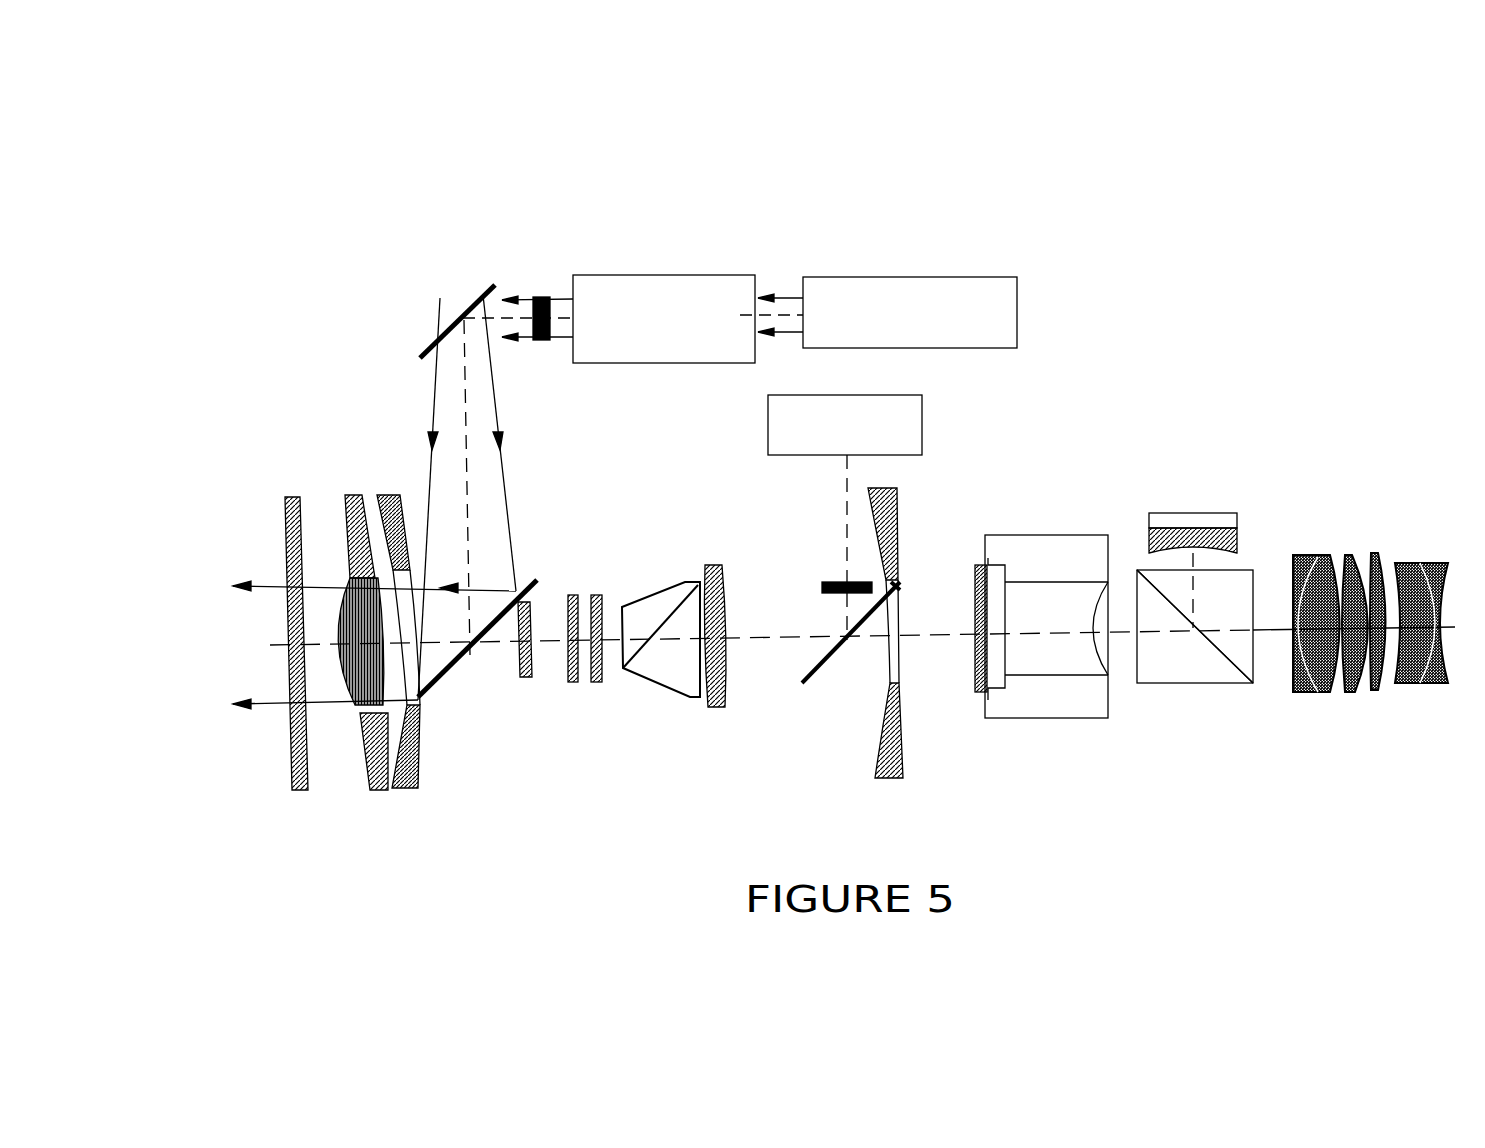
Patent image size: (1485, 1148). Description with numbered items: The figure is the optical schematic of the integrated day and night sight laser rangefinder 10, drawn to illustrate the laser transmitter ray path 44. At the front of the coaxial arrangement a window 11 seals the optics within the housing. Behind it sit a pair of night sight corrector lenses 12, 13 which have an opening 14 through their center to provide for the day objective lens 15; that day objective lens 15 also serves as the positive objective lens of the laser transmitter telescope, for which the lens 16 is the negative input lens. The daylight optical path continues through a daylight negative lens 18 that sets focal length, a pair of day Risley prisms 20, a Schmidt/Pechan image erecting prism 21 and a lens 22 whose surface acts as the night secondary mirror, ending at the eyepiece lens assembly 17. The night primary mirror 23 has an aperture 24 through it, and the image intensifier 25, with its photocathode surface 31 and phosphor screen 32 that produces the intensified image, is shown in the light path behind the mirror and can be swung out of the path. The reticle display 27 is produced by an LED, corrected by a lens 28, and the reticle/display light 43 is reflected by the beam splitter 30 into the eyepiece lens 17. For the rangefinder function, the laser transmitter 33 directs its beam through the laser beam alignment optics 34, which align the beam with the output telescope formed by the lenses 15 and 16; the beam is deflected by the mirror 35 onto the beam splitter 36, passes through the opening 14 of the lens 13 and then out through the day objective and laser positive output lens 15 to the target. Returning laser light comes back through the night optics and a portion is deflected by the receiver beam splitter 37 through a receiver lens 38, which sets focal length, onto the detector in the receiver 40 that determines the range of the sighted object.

The integrated day and night sight laser rangefinder 10 is at (293, 355).
The window 11 is at (292, 758).
The night sight corrector lens 12 is at (368, 792).
The night sight corrector lens 13 is at (415, 790).
The opening 14 is at (379, 637).
The day objective lens 15 is at (347, 580).
The laser telescope negative lens 16 is at (537, 290).
The eyepiece lens assembly 17 is at (1370, 693).
The daylight negative lens 18 is at (528, 603).
The day Risley prisms 20 is at (595, 683).
The Schmidt/Pechan image erecting prism 21 is at (657, 680).
The lens 22 is at (715, 707).
The night primary mirror 23 is at (893, 493).
The aperture 24 is at (895, 595).
The image intensifier 25 is at (1053, 535).
The reticle display 27 is at (1183, 512).
The lens 28 is at (1208, 525).
The beam splitter 30 is at (1188, 685).
The photocathode surface 31 is at (975, 690).
The phosphor screen 32 is at (1110, 652).
The laser transmitter 33 is at (903, 277).
The laser beam alignment optics 34 is at (690, 272).
The mirror 35 is at (440, 298).
The beam splitter 36 is at (537, 580).
The receiver beam splitter 37 is at (820, 670).
The receiver lens 38 is at (817, 577).
The receiver 40 is at (768, 425).
The reticle/display light 43 is at (1242, 580).
The laser transmitter ray path 44 is at (272, 582).